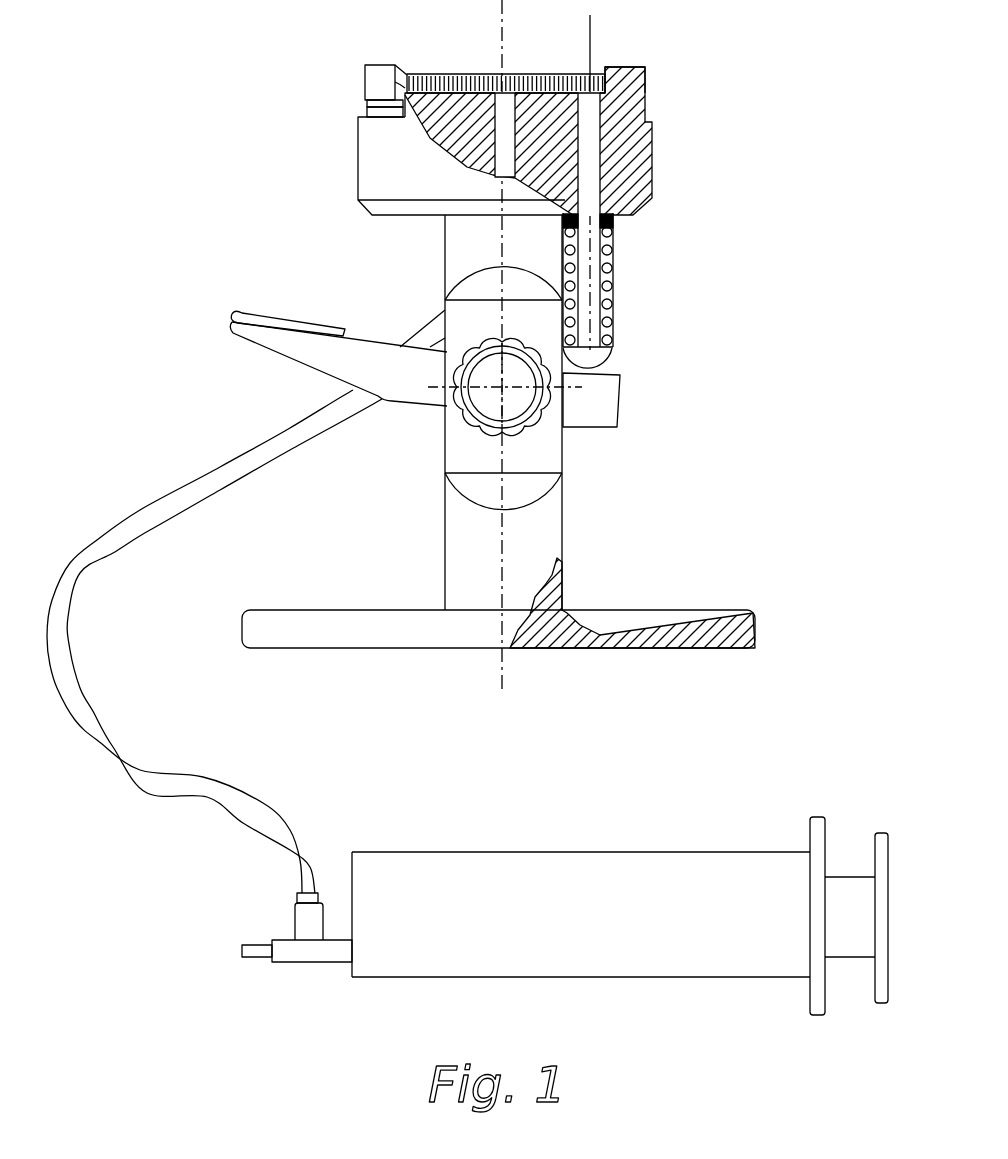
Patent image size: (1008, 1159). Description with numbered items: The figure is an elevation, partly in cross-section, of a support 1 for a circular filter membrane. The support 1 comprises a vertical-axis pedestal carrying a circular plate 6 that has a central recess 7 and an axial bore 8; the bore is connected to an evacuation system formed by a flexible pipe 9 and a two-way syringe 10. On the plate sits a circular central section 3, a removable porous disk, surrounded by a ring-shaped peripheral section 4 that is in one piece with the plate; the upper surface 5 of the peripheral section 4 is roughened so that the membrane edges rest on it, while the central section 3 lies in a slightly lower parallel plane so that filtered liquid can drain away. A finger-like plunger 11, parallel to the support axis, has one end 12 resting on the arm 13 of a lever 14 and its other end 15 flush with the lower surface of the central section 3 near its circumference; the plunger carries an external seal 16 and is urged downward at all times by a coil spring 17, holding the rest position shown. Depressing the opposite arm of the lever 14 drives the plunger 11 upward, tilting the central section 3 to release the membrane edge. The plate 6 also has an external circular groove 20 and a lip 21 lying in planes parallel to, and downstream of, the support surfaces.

The support 1 is at (312, 178).
The central section 3 is at (528, 75).
The peripheral section 4 is at (632, 77).
The upper surface 5 is at (388, 64).
The circular plate 6 is at (642, 172).
The central recess 7 is at (452, 72).
The axial bore 8 is at (467, 168).
The flexible pipe 9 is at (197, 488).
The two-way syringe 10 is at (528, 856).
The plunger 11 is at (590, 268).
The end of the plunger 12 is at (602, 357).
The arm 13 is at (584, 390).
The lever 14 is at (417, 392).
The other end of the plunger 15 is at (590, 135).
The seal 16 is at (617, 222).
The coil spring 17 is at (608, 308).
The external circular groove 20 is at (367, 105).
The lip 21 is at (358, 117).